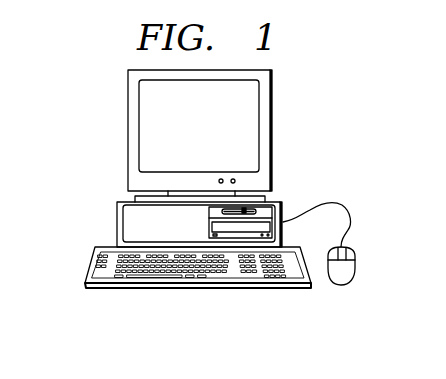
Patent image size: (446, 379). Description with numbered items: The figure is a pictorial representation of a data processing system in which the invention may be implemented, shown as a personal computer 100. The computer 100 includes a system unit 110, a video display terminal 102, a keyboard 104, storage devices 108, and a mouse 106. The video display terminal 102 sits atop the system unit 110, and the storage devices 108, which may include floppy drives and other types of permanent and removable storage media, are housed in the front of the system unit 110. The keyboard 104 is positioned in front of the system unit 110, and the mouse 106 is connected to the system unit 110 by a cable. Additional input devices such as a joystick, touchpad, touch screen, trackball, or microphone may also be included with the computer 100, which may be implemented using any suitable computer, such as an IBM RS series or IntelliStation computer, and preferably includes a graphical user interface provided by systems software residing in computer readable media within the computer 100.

The computer 100 is at (88, 70).
The video display terminal 102 is at (142, 127).
The keyboard 104 is at (113, 273).
The mouse 106 is at (341, 277).
The storage devices 108 is at (249, 212).
The system unit 110 is at (117, 225).